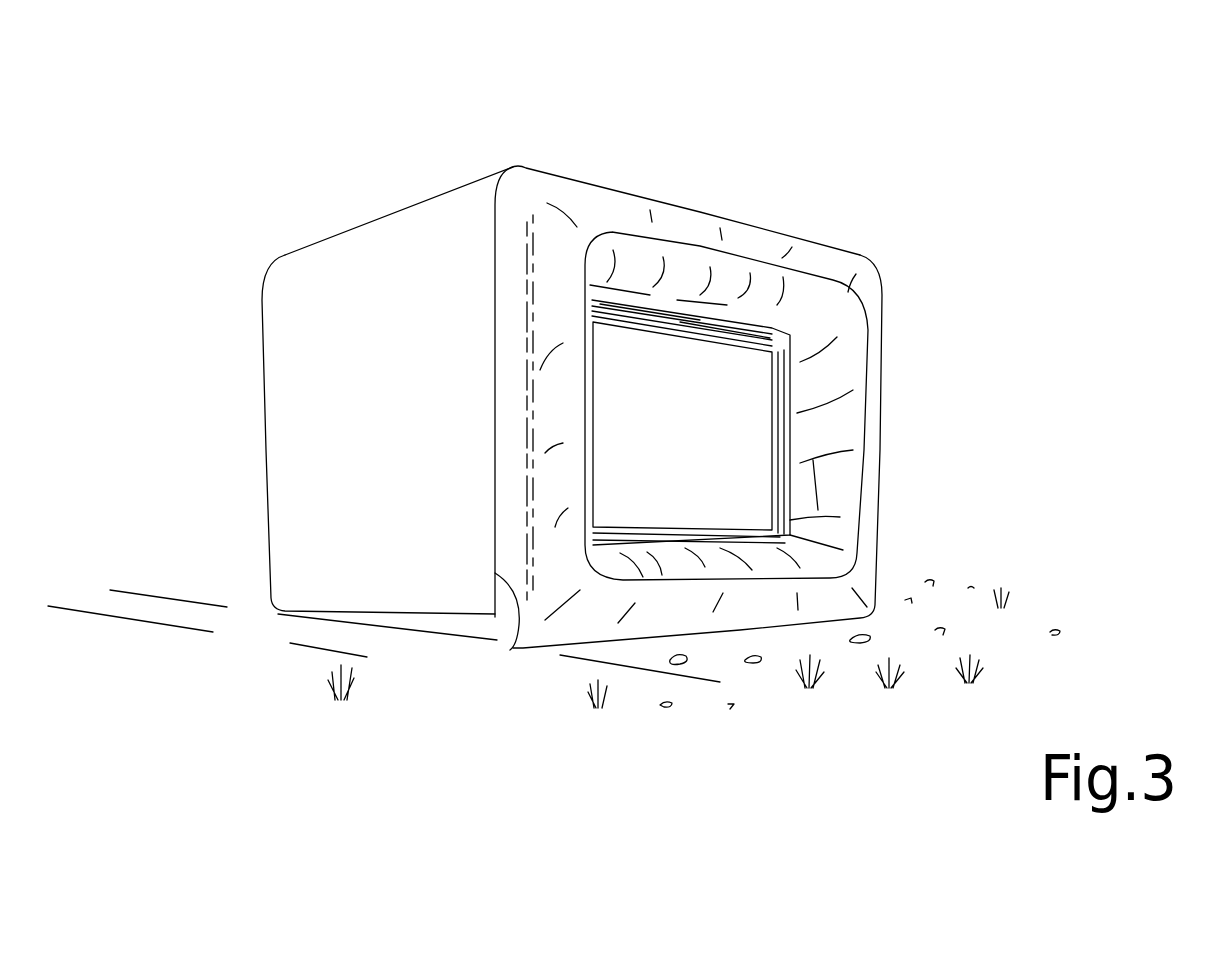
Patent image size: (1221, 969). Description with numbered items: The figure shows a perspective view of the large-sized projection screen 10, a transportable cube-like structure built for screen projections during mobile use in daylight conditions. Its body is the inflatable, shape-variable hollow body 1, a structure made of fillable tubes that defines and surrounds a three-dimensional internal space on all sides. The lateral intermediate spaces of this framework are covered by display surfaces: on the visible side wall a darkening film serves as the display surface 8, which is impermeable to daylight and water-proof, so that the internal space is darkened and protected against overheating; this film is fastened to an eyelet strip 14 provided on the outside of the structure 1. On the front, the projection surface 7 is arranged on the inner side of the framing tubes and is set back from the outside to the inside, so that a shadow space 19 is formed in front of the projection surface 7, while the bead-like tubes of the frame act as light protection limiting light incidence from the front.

The large-sized projection screen 10 is at (427, 157).
The hollow body 1 is at (870, 265).
The display surface 8 is at (398, 414).
The projection surface 7 is at (690, 441).
The shadow space 19 is at (795, 318).
The eyelet strip 14 is at (517, 642).